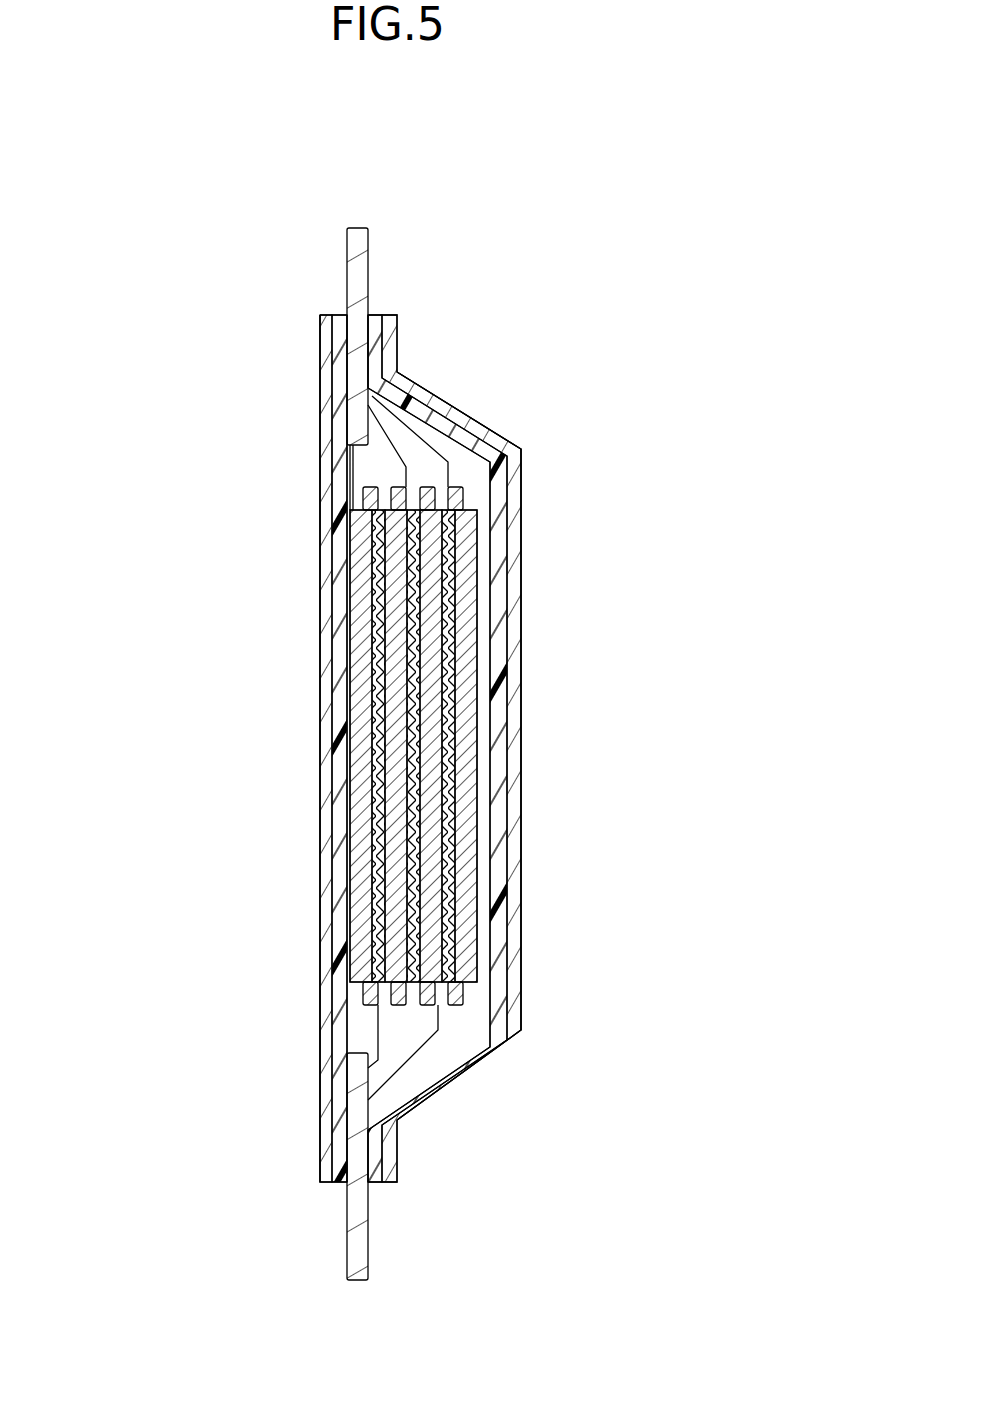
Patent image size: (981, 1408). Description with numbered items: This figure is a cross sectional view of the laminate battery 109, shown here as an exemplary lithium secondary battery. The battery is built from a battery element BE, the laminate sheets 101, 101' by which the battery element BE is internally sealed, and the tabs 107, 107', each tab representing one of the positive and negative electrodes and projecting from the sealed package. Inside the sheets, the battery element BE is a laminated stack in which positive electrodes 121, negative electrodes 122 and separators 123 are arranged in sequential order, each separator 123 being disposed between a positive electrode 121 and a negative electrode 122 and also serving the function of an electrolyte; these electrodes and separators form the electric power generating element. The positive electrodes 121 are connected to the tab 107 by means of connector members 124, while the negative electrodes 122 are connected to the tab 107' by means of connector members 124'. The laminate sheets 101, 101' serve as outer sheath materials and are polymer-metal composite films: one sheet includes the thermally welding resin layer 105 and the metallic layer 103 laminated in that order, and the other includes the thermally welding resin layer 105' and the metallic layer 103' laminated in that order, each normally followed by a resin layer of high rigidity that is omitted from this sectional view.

The laminate battery 109 is at (527, 275).
The tab 107' is at (361, 300).
The tab 107 is at (359, 1201).
The laminate sheet 101' is at (235, 748).
The laminate sheet 101 is at (536, 748).
The metallic layer 103' is at (273, 748).
The metallic layer 103 is at (492, 748).
The thermally welding resin layer 105' is at (282, 748).
The thermally welding resin layer 105 is at (485, 748).
The battery element BE is at (482, 994).
The positive electrode 121 is at (358, 975).
The negative electrode 122 is at (360, 583).
The separator 123 is at (362, 496).
The connector member 124' is at (375, 426).
The connector member 124 is at (470, 1075).